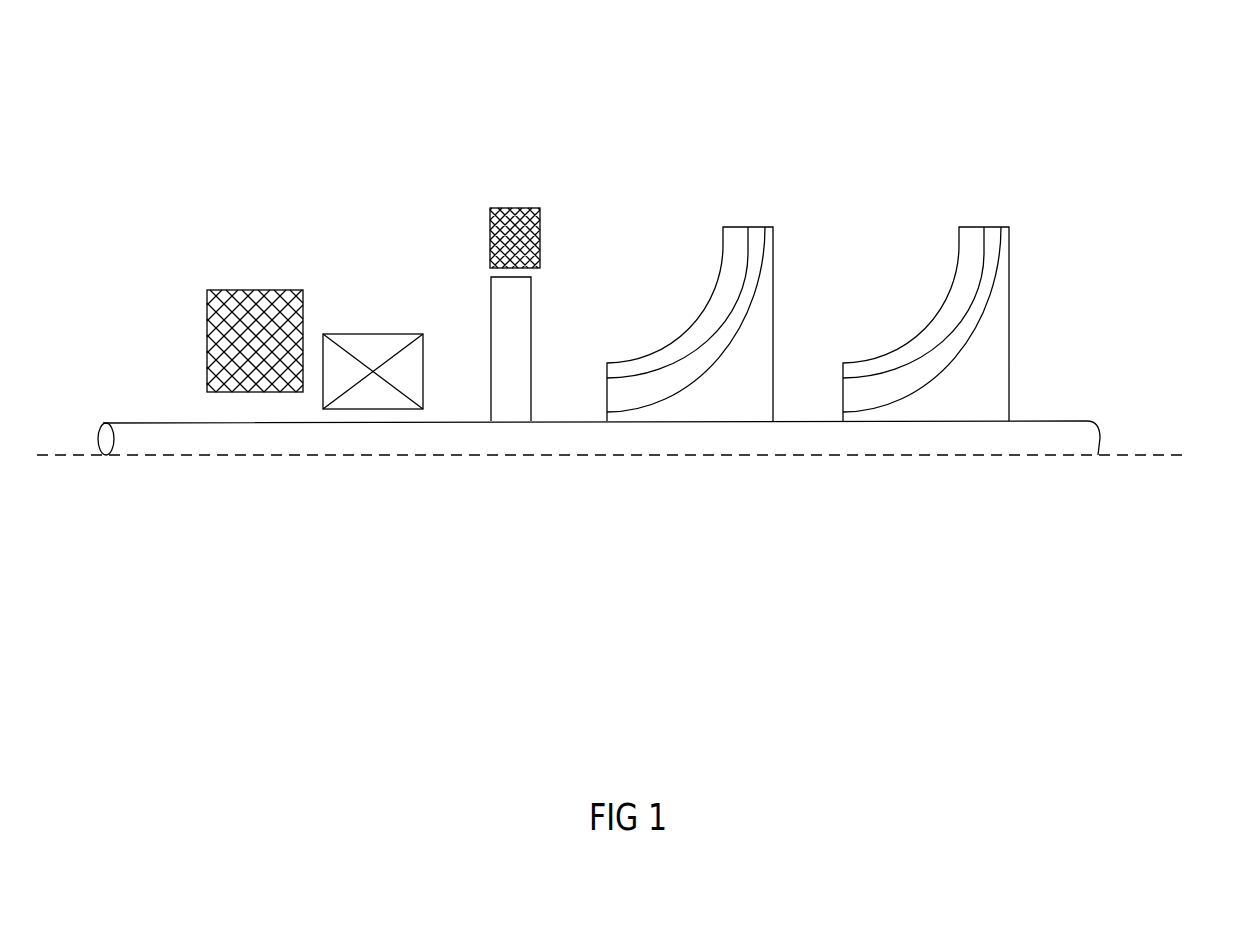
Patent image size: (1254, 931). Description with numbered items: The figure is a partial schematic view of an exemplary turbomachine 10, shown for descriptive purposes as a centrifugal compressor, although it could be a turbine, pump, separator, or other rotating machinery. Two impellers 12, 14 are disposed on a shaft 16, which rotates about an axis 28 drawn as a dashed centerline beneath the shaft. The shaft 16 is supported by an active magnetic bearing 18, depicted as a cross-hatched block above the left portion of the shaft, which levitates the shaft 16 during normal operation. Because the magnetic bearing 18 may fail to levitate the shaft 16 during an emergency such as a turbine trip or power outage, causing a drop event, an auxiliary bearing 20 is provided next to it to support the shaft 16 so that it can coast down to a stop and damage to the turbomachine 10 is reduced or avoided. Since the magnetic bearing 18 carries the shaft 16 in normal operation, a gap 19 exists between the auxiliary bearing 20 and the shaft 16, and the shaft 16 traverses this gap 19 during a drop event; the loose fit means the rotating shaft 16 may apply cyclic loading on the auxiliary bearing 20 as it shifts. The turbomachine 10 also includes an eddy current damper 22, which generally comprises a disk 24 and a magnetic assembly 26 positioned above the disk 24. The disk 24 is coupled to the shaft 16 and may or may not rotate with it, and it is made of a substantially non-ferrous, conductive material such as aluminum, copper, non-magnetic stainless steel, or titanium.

The turbomachine 10 is at (1042, 101).
The impeller 12 is at (765, 226).
The impeller 14 is at (1008, 226).
The shaft 16 is at (1077, 427).
The active magnetic bearing 18 is at (253, 290).
The gap 19 is at (410, 414).
The auxiliary bearing 20 is at (352, 333).
The eddy current damper 22 is at (599, 154).
The disk 24 is at (531, 322).
The magnetic assembly 26 is at (495, 208).
The axis 28 is at (1177, 454).